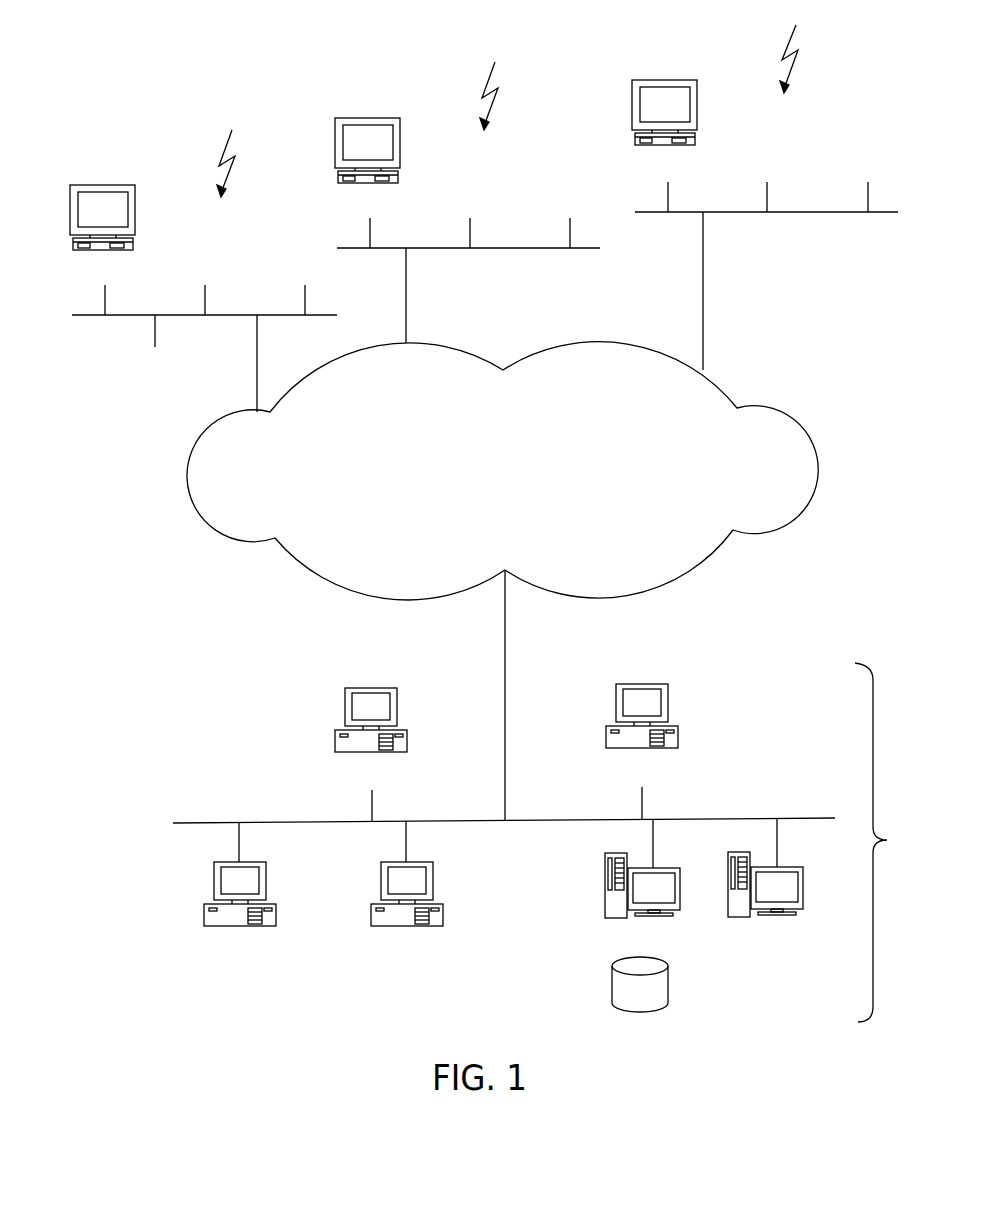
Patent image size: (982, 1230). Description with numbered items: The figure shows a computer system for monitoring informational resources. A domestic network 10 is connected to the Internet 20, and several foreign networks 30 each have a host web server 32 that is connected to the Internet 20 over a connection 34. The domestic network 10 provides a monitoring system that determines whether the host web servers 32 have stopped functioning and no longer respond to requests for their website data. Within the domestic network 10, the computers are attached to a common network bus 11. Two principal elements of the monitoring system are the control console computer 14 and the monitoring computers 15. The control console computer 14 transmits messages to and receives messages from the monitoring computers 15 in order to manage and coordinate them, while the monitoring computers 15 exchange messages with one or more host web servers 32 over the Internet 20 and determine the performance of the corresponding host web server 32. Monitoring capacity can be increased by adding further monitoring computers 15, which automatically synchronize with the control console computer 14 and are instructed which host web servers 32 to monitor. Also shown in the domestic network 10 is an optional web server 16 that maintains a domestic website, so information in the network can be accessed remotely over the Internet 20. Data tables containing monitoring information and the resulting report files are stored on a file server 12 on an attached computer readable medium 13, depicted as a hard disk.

The domestic network 10 is at (890, 842).
The local area network 11 is at (265, 823).
The file server 12 is at (605, 902).
The computer readable medium 13 is at (612, 990).
The control console computer 14 is at (433, 882).
The monitoring computers 15 is at (398, 707).
The web server 16 is at (805, 888).
The Internet 20 is at (692, 573).
The foreign networks 30 is at (513, 98).
The host web server 32 is at (103, 184).
The connection 34 is at (237, 315).